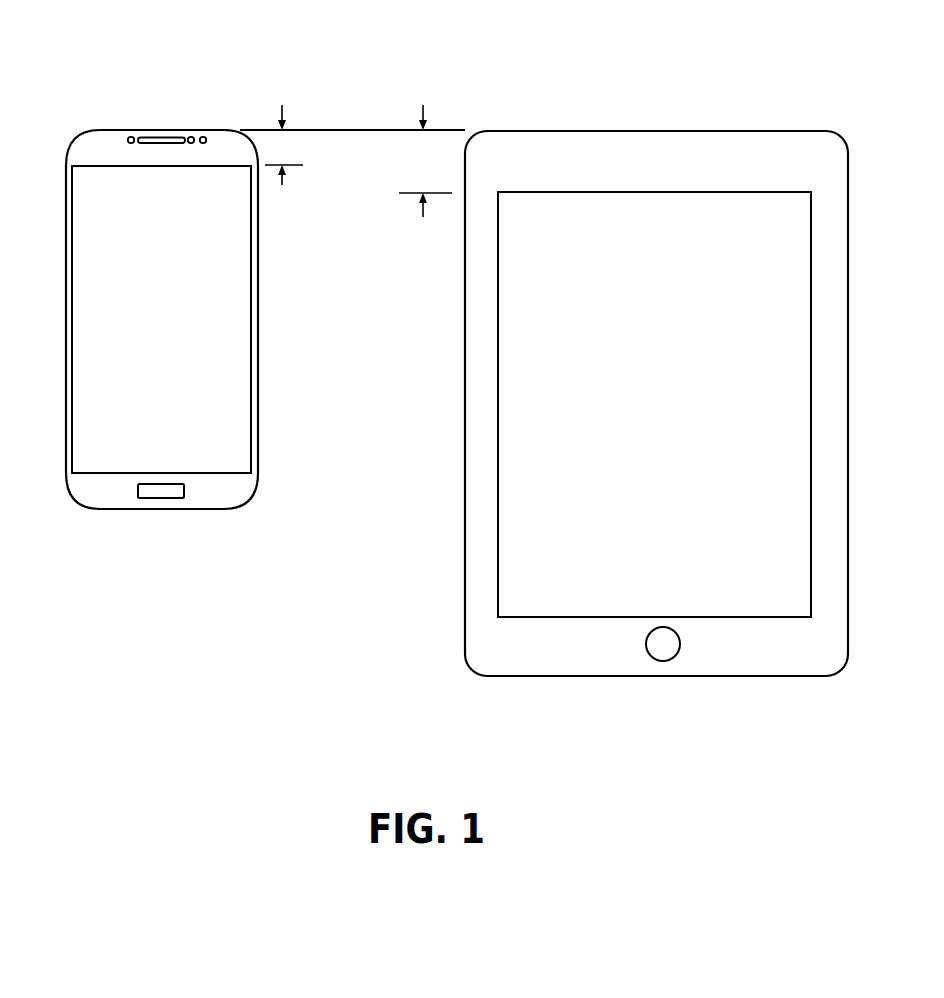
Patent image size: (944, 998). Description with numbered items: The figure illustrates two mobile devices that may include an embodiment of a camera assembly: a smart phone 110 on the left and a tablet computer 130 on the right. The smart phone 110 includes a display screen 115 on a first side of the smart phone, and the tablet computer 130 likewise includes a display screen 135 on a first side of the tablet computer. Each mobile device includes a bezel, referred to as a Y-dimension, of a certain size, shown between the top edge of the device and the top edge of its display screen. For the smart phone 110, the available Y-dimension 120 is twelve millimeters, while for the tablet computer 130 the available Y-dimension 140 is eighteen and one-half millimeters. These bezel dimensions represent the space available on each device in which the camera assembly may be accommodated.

The smartphone (first device) 110 is at (119, 90).
The smartphone display screen 115 is at (225, 388).
The smartphone bezel width (12 mm) 120 is at (352, 161).
The tablet (second device) 130 is at (491, 77).
The tablet display screen 135 is at (530, 572).
The tablet bezel width (18.5 mm) 140 is at (408, 174).